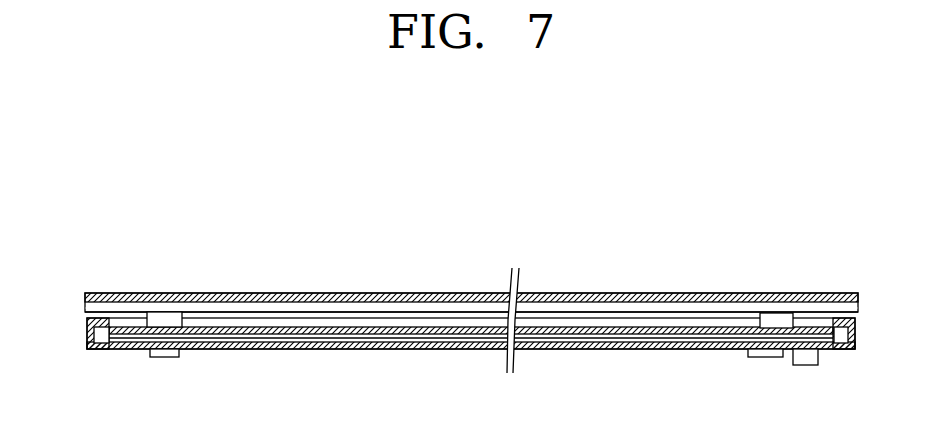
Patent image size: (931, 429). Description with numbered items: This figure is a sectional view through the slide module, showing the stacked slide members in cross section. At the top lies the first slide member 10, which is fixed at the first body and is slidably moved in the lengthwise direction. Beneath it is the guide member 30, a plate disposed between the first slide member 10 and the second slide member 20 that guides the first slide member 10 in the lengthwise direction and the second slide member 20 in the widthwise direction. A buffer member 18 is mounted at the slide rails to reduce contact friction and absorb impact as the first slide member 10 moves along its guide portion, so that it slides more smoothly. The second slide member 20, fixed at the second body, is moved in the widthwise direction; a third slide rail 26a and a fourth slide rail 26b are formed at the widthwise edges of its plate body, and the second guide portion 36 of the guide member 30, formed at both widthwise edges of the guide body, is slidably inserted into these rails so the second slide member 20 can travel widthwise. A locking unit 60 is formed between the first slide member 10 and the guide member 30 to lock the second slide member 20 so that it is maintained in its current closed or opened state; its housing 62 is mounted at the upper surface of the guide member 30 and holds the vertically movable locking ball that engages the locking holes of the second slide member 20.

The first slide member 10 is at (244, 293).
The buffer member 18 is at (454, 312).
The second slide member 20 is at (408, 350).
The guide member 30 is at (307, 338).
The second guide portion 36 is at (106, 349).
The locking unit 60 is at (178, 352).
The housing 62 is at (163, 321).
The third slide rail 26a is at (94, 334).
The fourth slide rail 26b is at (848, 336).